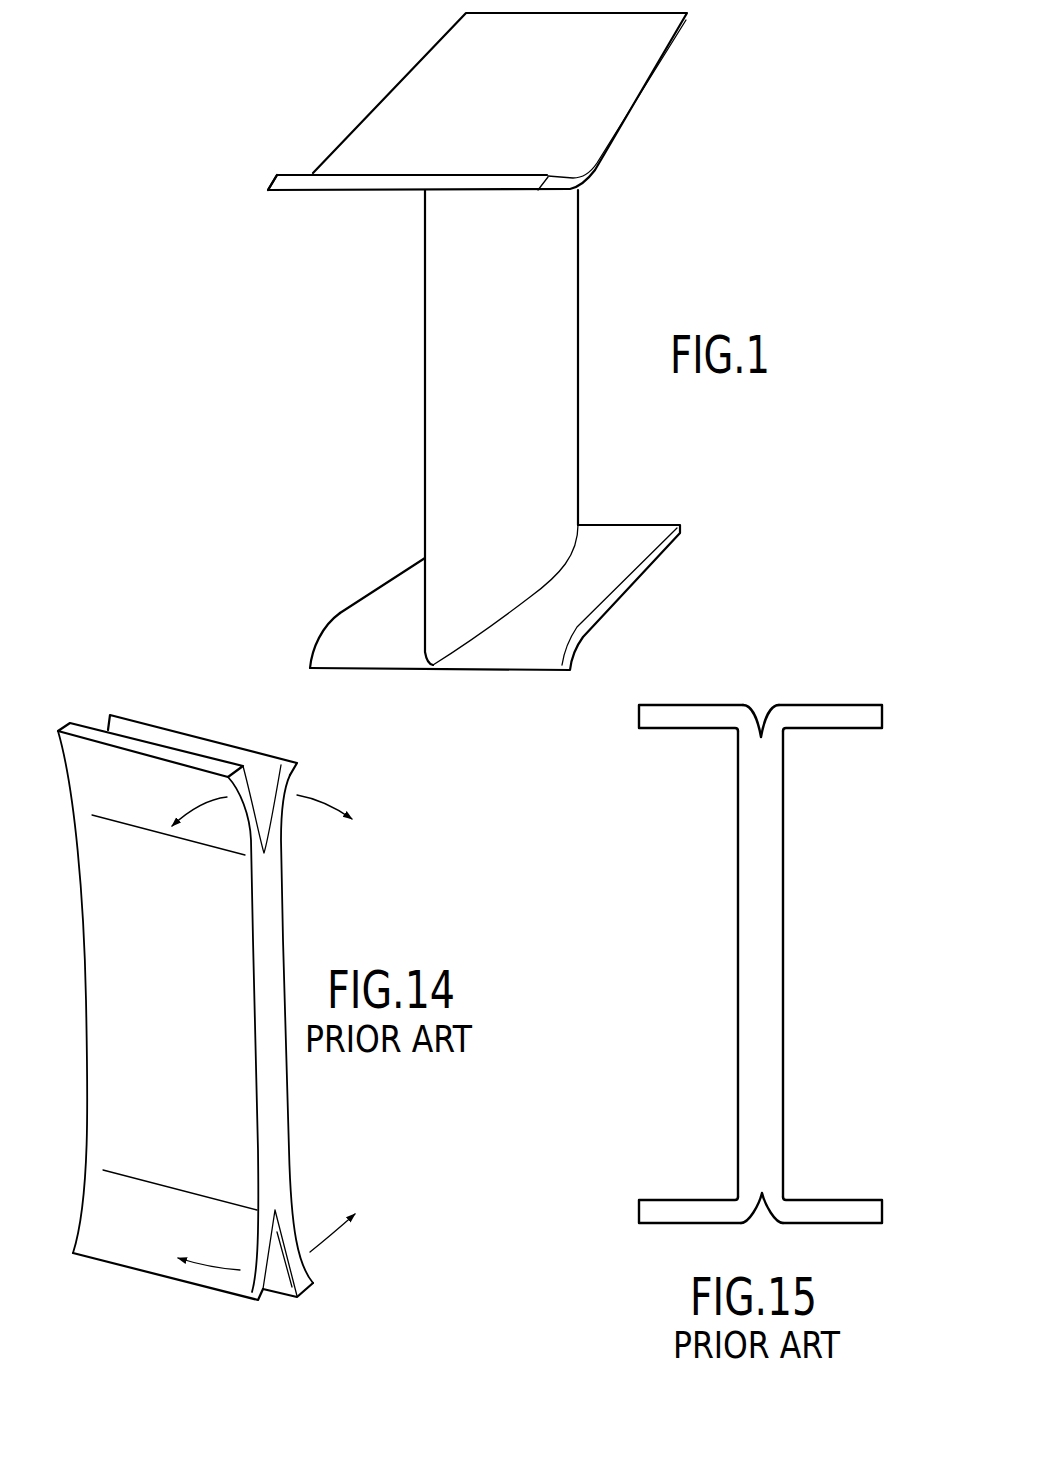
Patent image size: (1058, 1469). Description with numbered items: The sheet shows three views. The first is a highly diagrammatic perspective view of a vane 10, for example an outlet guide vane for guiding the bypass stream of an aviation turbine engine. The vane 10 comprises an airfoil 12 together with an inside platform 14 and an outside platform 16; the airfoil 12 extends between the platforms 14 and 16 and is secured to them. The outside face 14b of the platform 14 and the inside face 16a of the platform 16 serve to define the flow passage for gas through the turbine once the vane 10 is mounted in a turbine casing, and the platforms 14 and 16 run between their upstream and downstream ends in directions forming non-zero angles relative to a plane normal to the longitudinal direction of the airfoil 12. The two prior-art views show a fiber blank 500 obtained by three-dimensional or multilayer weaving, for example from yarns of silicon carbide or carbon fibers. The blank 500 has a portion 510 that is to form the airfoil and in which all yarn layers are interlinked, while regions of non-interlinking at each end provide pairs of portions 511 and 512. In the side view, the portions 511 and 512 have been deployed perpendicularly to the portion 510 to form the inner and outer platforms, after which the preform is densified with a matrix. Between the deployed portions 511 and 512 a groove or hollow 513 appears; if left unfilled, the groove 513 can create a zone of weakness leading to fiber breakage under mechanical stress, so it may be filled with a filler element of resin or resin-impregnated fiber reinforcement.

In FIG. 1, the vane 10 is at (262, 88).
In FIG. 1, the airfoil 12 is at (563, 355).
In FIG. 1, the inside platform 14 is at (403, 590).
In FIG. 1, the outside face 14b is at (363, 615).
In FIG. 1, the outside platform 16 is at (417, 95).
In FIG. 1, the inside face 16a is at (395, 190).
In FIG. 14, the fiber blank 500 is at (332, 911).
In FIG. 15, the fiber blank 500 is at (865, 842).
In FIG. 14, the airfoil portion 510 is at (277, 1090).
In FIG. 15, the airfoil portion 510 is at (773, 942).
In FIG. 14, the deployable portion 511 is at (245, 758).
In FIG. 15, the deployable portion 511 is at (670, 720).
In FIG. 14, the deployable portion 512 is at (287, 772).
In FIG. 15, the deployable portion 512 is at (840, 720).
In FIG. 15, the groove 513 is at (762, 716).